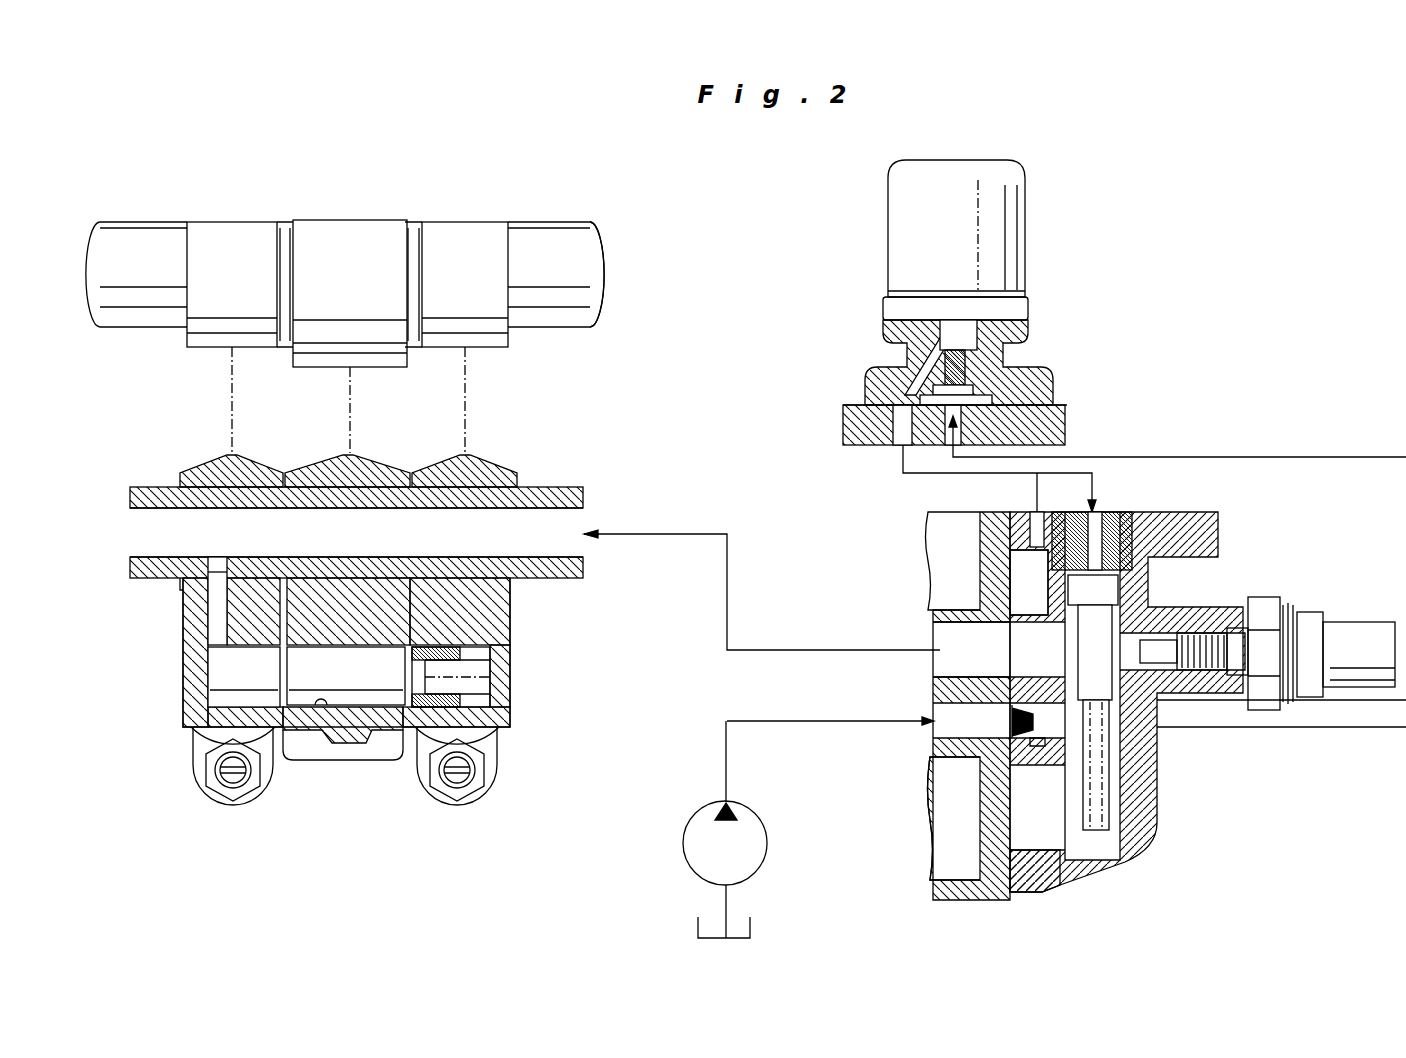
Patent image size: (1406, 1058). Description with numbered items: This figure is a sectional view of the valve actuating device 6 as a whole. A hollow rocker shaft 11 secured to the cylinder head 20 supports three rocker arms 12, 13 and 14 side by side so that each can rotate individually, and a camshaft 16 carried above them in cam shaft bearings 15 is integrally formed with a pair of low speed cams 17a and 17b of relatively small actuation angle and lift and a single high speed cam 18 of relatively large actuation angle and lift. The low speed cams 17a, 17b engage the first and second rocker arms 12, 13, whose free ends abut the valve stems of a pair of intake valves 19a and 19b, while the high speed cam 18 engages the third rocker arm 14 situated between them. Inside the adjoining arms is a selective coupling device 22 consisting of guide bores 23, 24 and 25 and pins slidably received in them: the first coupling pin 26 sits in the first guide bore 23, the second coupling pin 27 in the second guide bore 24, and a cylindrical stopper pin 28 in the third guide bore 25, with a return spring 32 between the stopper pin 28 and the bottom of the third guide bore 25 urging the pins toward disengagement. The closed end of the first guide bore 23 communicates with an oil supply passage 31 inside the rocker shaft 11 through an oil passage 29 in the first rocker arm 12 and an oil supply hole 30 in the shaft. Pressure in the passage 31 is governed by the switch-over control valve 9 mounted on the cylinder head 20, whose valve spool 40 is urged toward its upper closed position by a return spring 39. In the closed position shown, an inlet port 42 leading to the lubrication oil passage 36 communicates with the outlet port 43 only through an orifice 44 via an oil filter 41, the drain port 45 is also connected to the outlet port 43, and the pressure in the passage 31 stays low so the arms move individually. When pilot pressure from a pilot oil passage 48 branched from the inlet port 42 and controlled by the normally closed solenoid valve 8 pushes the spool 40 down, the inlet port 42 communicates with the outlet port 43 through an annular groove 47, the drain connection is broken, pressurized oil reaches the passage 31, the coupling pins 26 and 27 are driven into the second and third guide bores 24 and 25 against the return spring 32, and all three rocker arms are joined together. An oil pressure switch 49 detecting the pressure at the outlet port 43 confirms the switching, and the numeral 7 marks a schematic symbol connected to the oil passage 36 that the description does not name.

The valve actuating device 6 is at (588, 398).
The pump 7 is at (768, 851).
The solenoid valve 8 is at (1033, 313).
The switch-over control valve 9 is at (1172, 754).
The rocker shaft 11 is at (568, 482).
The first rocker arm 12 is at (254, 468).
The second rocker arm 13 is at (492, 468).
The third rocker arm 14 is at (376, 468).
The cam shaft bearings 15 is at (578, 222).
The camshaft 16 is at (597, 268).
The low speed cam 17a is at (221, 221).
The low speed cam 17b is at (463, 221).
The high speed cam 18 is at (346, 220).
The intake valve 19a is at (248, 828).
The intake valve 19b is at (473, 831).
The cylinder head 20 is at (995, 898).
The selective coupling device 22 is at (368, 724).
The first guide bore 23 is at (237, 650).
The second guide bore 24 is at (320, 707).
The third guide bore 25 is at (482, 708).
The first coupling pin 26 is at (240, 678).
The second coupling pin 27 is at (332, 678).
The stopper pin 28 is at (460, 642).
The oil passage 29 is at (213, 622).
The oil supply hole 30 is at (213, 576).
The oil supply passage 31 is at (147, 511).
The return spring 32 is at (492, 678).
The lubrication oil passage 36 is at (800, 724).
The return spring 39 is at (1118, 823).
The valve spool 40 is at (1117, 598).
The oil filter 41 is at (1037, 747).
The inlet port 42 is at (948, 731).
The outlet port 43 is at (950, 644).
The orifice 44 is at (1040, 682).
The drain port 45 is at (990, 560).
The annular groove 47 is at (1073, 648).
The pilot oil passage 48 is at (1334, 731).
The oil pressure switch 49 is at (1352, 621).